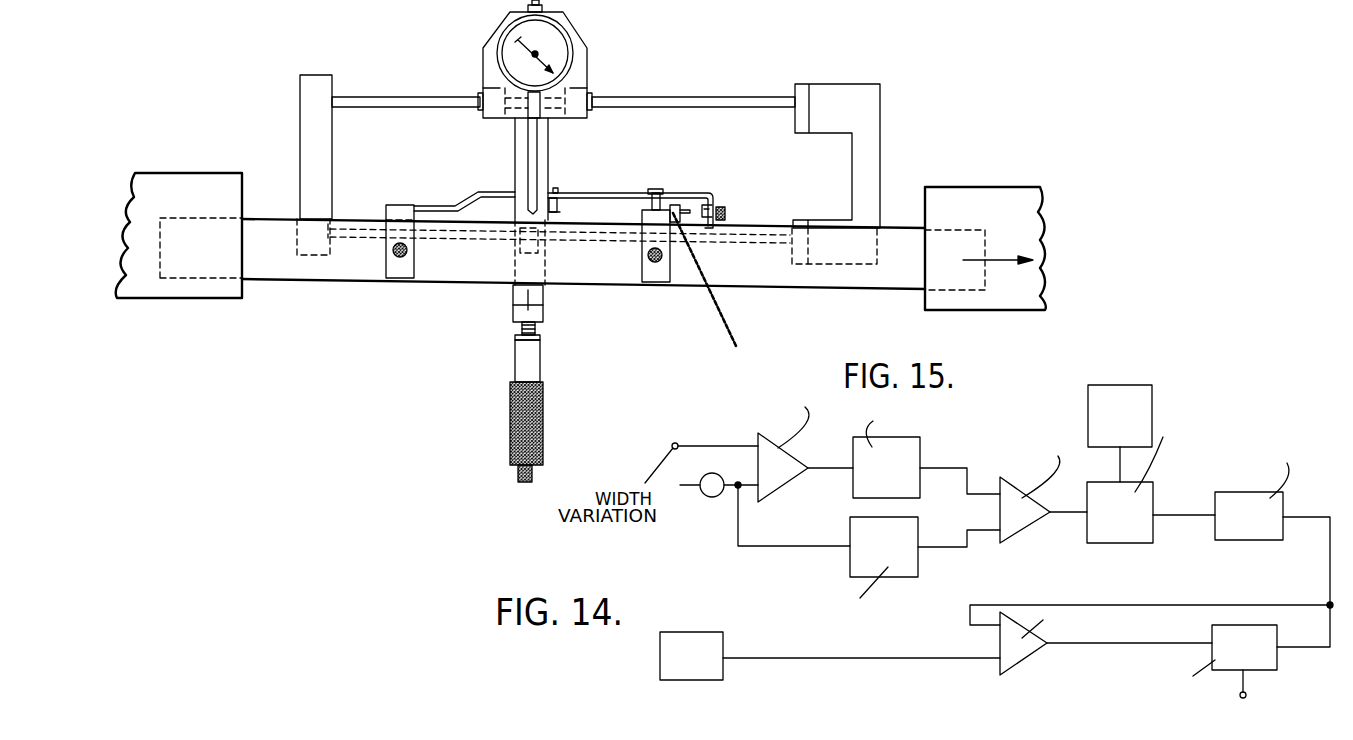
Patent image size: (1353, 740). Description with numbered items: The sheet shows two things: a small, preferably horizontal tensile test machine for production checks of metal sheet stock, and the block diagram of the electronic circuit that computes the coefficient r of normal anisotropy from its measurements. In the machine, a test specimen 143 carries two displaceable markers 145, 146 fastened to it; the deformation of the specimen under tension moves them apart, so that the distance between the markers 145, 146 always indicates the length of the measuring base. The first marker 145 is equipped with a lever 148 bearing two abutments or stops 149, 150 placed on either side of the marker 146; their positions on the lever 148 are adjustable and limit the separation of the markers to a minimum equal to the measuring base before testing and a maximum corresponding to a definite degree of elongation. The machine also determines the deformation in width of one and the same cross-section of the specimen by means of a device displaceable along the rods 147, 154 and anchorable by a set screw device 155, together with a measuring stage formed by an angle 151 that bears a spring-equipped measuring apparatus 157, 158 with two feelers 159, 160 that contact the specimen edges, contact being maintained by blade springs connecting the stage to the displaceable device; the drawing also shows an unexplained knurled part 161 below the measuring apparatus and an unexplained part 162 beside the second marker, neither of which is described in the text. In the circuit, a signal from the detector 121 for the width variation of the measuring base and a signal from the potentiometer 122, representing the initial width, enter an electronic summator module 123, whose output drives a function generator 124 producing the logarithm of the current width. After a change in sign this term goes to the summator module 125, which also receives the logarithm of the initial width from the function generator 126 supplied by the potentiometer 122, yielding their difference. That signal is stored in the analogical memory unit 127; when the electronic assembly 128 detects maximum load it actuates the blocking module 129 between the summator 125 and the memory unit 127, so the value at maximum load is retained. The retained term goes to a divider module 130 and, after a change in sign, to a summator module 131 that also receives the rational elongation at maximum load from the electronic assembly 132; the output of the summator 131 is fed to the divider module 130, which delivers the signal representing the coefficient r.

In FIG. 15, the detector 121 is at (701, 449).
In FIG. 15, the potentiometer 122 is at (765, 509).
In FIG. 15, the electronic summator module 123 is at (776, 450).
In FIG. 15, the function generator 124 is at (926, 447).
In FIG. 15, the summator module 125 is at (1022, 509).
In FIG. 15, the function generator 126 is at (872, 574).
In FIG. 15, the analogical memory unit 127 is at (1271, 550).
In FIG. 15, the electronic assembly for determining maximum load 128 is at (1120, 433).
In FIG. 15, the blocking module 129 is at (1170, 486).
In FIG. 15, the divider module 130 is at (1194, 661).
In FIG. 15, the summator module 131 is at (1150, 653).
In FIG. 15, the electronic assembly 132 is at (830, 656).
In FIG. 14, the test specimen 143 is at (497, 280).
In FIG. 14, the displaceable marker 145 is at (402, 278).
In FIG. 14, the displaceable marker 146 is at (653, 273).
In FIG. 14, the rod 147 is at (360, 237).
In FIG. 14, the lever 148 is at (445, 207).
In FIG. 14, the abutment or stop 149 is at (567, 198).
In FIG. 14, the abutment or stop 150 is at (712, 207).
In FIG. 14, the angle 151 is at (542, 153).
In FIG. 14, the rod 154 is at (655, 103).
In FIG. 14, the set screw device 155 is at (508, 247).
In FIG. 14, the measuring apparatus 157 is at (578, 72).
In FIG. 14, the measuring apparatus 158 is at (530, 352).
In FIG. 14, the feeler 159 is at (530, 292).
In FIG. 14, the feeler 160 is at (530, 218).
In FIG. 14, the knurled knob 161 is at (543, 420).
In FIG. 14, the latch 162 is at (672, 210).